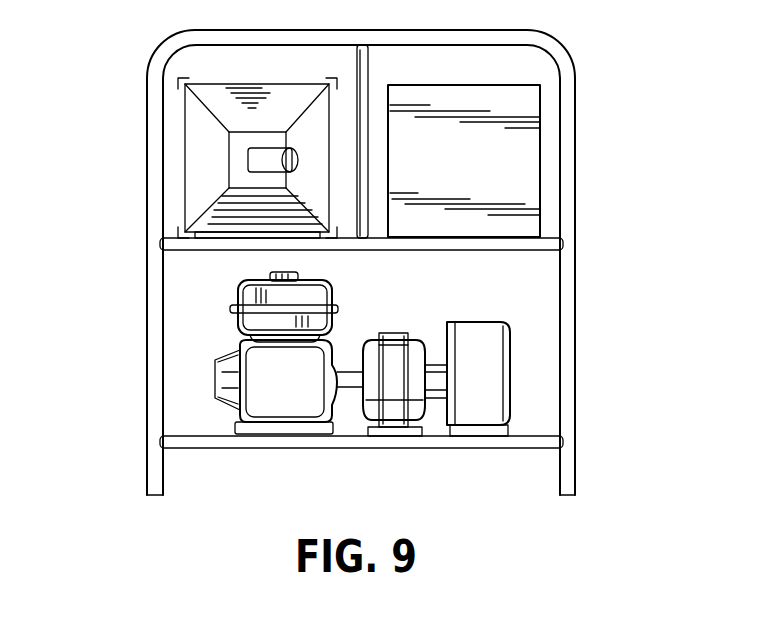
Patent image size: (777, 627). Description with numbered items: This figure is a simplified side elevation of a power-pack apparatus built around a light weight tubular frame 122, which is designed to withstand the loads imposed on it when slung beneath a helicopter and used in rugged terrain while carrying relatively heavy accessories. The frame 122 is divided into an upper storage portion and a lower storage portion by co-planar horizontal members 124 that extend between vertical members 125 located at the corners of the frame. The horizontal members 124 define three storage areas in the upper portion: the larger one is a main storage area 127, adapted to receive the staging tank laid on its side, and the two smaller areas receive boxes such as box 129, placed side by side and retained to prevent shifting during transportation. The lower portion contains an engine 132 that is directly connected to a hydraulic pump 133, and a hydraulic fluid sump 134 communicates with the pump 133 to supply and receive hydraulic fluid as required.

The tubular frame 122 is at (102, 52).
The co-planar horizontal members 124 is at (492, 247).
The vertical members 125 is at (157, 190).
The main storage area 127 is at (190, 140).
The box 129 is at (522, 164).
The engine 132 is at (227, 365).
The hydraulic pump 133 is at (397, 405).
The hydraulic fluid sump 134 is at (483, 368).